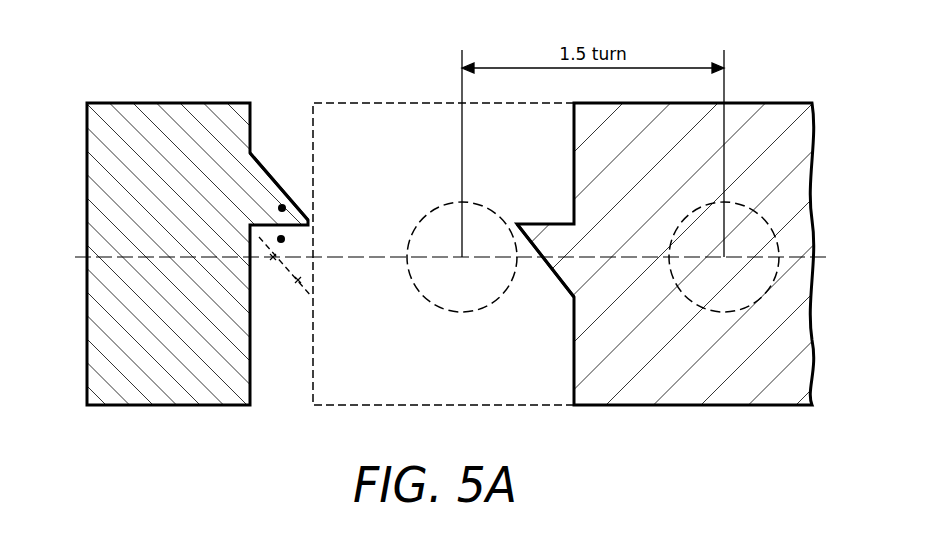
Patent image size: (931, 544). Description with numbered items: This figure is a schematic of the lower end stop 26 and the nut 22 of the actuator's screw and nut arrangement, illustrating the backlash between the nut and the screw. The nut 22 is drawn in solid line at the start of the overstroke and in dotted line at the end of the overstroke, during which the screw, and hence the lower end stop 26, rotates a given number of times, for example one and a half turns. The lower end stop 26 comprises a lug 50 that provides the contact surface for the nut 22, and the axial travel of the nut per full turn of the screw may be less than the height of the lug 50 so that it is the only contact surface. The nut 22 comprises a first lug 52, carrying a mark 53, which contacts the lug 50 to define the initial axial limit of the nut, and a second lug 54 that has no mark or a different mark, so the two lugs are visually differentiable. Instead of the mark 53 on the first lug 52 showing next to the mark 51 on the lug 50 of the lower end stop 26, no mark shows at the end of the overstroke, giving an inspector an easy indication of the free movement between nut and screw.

The nut 22 is at (595, 407).
The lower end stop 26 is at (108, 407).
The lug 50 is at (265, 175).
The mark 51 is at (284, 207).
The first lug 52 is at (298, 285).
The mark 53 is at (281, 242).
The second lug 54 is at (552, 267).